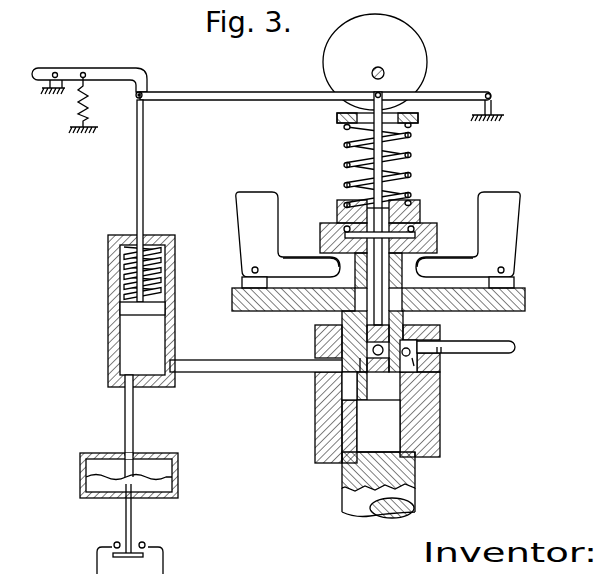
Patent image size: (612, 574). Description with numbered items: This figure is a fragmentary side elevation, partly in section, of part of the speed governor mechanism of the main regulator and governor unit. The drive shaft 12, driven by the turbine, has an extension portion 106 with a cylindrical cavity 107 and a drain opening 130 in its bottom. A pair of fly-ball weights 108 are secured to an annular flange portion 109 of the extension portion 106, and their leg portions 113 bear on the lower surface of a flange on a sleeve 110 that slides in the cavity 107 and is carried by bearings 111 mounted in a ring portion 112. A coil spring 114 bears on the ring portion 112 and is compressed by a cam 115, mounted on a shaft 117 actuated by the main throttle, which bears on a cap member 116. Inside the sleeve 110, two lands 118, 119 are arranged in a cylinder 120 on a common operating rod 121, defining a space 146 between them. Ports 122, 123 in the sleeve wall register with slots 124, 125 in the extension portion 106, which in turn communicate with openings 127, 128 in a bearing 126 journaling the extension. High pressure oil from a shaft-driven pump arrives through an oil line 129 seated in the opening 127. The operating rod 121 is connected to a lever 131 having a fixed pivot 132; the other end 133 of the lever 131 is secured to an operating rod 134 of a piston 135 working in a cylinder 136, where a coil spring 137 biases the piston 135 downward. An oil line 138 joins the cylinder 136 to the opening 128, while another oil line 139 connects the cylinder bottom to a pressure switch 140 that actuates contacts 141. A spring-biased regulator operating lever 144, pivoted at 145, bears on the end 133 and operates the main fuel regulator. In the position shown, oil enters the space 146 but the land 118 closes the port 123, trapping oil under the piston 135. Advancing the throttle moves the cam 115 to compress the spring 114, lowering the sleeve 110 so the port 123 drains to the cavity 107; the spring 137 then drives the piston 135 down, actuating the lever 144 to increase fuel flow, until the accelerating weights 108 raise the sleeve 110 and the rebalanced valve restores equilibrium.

The drive shaft 12 is at (412, 494).
The extension portion 106 is at (415, 432).
The cylindrical cavity 107 is at (357, 448).
The fly-ball weights 108 is at (250, 193).
The annular flange portion 109 is at (527, 297).
The sleeve 110 is at (320, 228).
The bearings 111 is at (415, 226).
The ring portion 112 is at (337, 206).
The leg portions 113 is at (287, 267).
The coil spring 114 is at (345, 145).
The cam 115 is at (421, 44).
The cap member 116 is at (418, 118).
The shaft 117 is at (374, 68).
The land 118 is at (378, 365).
The land 119 is at (378, 333).
The cylinder 120 is at (379, 398).
The operating rod 121 is at (380, 196).
The port 122 is at (400, 352).
The port 123 is at (360, 370).
The slot 124 is at (412, 355).
The slot 125 is at (348, 392).
The bearing 126 is at (318, 434).
The opening 127 is at (425, 340).
The opening 128 is at (358, 362).
The oil line 129 is at (493, 341).
The drain opening 130 is at (410, 460).
The lever 131 is at (457, 91).
The fixed pivot 132 is at (492, 93).
The end of lever 133 is at (144, 92).
The operating rod 134 is at (143, 178).
The piston 135 is at (122, 306).
The cylinder 136 is at (108, 284).
The coil spring 137 is at (118, 262).
The oil line 138 is at (221, 360).
The oil line 139 is at (124, 424).
The pressure switch 140 is at (178, 466).
The contacts 141 is at (136, 547).
The regulator operating lever 144 is at (115, 68).
The pivot 145 is at (57, 72).
The space 146 is at (373, 350).